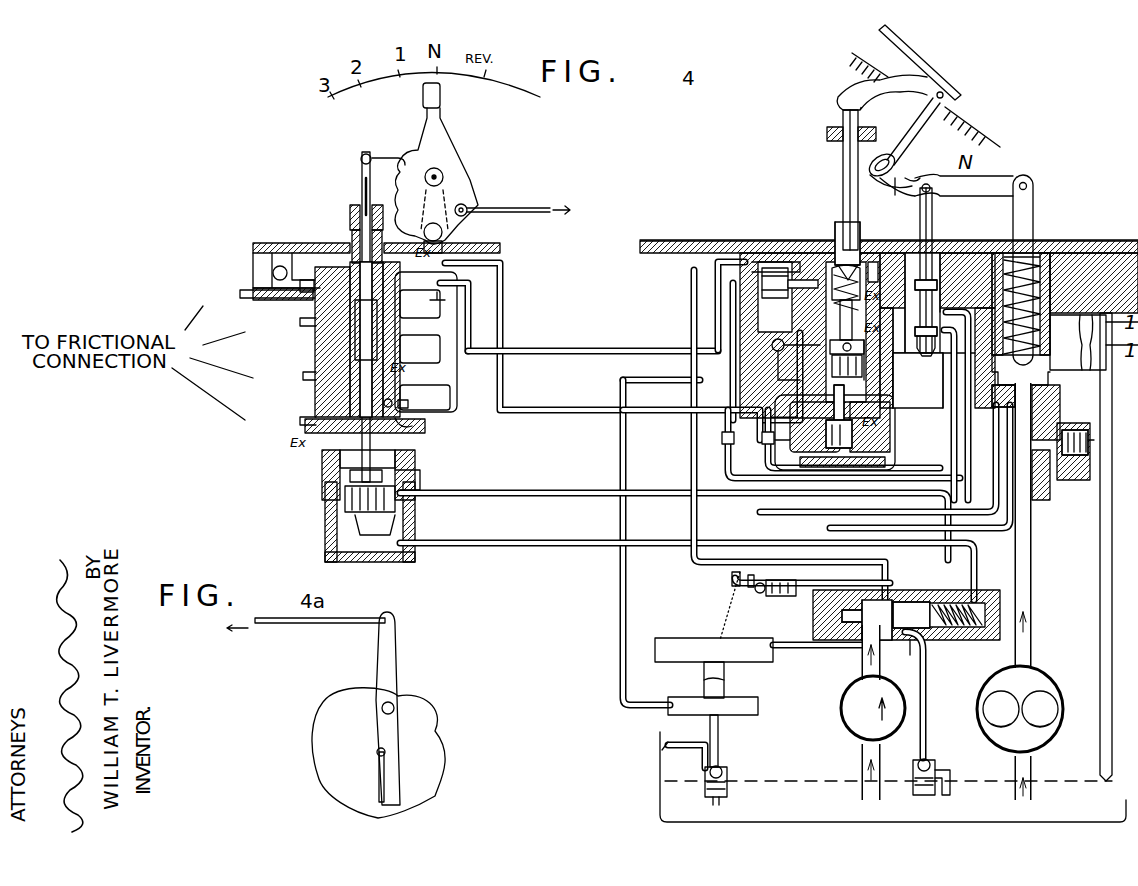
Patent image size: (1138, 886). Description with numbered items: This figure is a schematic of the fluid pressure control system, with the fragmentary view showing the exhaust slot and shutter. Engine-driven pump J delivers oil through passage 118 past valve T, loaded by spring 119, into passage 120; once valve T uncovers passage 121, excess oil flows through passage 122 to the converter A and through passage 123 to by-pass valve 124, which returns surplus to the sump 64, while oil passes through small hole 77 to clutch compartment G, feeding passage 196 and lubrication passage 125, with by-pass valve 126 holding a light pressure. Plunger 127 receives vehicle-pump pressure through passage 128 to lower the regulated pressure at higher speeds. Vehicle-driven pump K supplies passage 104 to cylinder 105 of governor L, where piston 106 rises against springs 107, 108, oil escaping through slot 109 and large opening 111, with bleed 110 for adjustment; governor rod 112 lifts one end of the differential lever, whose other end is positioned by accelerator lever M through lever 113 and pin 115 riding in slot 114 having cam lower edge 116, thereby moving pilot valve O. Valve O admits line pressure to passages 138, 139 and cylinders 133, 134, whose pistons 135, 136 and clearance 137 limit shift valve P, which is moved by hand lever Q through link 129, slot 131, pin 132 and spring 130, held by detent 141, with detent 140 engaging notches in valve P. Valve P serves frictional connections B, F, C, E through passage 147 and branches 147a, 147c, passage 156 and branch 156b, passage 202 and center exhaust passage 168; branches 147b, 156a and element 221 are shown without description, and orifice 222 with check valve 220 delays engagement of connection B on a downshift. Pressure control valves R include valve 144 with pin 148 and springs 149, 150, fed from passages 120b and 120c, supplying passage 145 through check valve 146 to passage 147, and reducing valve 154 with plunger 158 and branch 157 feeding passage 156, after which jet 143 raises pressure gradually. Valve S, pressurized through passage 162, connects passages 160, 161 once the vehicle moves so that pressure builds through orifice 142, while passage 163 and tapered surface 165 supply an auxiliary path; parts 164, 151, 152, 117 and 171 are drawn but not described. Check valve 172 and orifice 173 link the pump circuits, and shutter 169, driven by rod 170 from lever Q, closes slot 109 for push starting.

In FIG. 4, the lost-motion link 129 is at (362, 162).
In FIG. 4, the slot 131 is at (362, 188).
In FIG. 4, the pin 132 is at (350, 204).
In FIG. 4, the orifice 222 is at (310, 287).
In FIG. 4, the check valve 220 is at (270, 272).
In FIG. 4, the compression spring 130 is at (360, 333).
In FIG. 4, the clearance 137 is at (345, 462).
In FIG. 4, the piston 135 is at (336, 484).
In FIG. 4, the piston 136 is at (330, 520).
In FIG. 4, the cylinder 134 is at (375, 540).
In FIG. 4, the cylinder 133 is at (410, 478).
In FIG. 4, the center passage 168 is at (392, 442).
In FIG. 4, the detent 140 is at (395, 400).
In FIG. 4, the passage 202 is at (395, 345).
In FIG. 4, the passage 221 is at (437, 318).
In FIG. 4, the detent 141 is at (445, 235).
In FIG. 4, the branch passage 156b is at (495, 268).
In FIG. 4, the branch passage 147a is at (445, 289).
In FIG. 4, the branch passage 156a is at (423, 342).
In FIG. 4, the branch passage 147b is at (420, 392).
In FIG. 4, the branch passage 147c is at (412, 426).
In FIG. 4, the passage 147 is at (566, 351).
In FIG. 4, the passage 156 is at (570, 410).
In FIG. 4, the passage 138 is at (560, 486).
In FIG. 4, the passage 139 is at (550, 543).
In FIG. 4, the passage 162 is at (692, 268).
In FIG. 4, the passage 161 is at (716, 306).
In FIG. 4, the passage 160 is at (730, 375).
In FIG. 4, the passage 145 is at (769, 376).
In FIG. 4, the check valve 146 is at (776, 350).
In FIG. 4, the orifice 142 is at (727, 450).
In FIG. 4, the small jet 143 is at (765, 445).
In FIG. 4, the branch passage 157 is at (812, 442).
In FIG. 4, the reducing valve 154 is at (836, 423).
In FIG. 4, the plunger 158 is at (842, 400).
In FIG. 4, the tapered surface 165 is at (866, 260).
In FIG. 4, the passage 163 is at (805, 262).
In FIG. 4, the valve 164 is at (815, 255).
In FIG. 4, the plunger rod 152 is at (843, 158).
In FIG. 4, the clevis 151 is at (843, 100).
In FIG. 4, the lever 113 is at (912, 148).
In FIG. 4, the lower edge 116 is at (880, 178).
In FIG. 4, the roller or pin 115 is at (898, 175).
In FIG. 4, the arm 117 is at (935, 192).
In FIG. 4, the slot 114 is at (903, 199).
In FIG. 4, the governor rod 112 is at (1033, 238).
In FIG. 4, the spring 108 is at (1048, 272).
In FIG. 4, the spring 107 is at (1072, 316).
In FIG. 4, the piston 106 is at (1045, 380).
In FIG. 4, the cylinder 105 is at (1045, 400).
In FIG. 4, the adjustable orifice or bleed 110 is at (1064, 480).
In FIG. 4, the passage 104 is at (1030, 574).
In FIG. 4, the spring 150 is at (858, 275).
In FIG. 4, the passage 120c is at (893, 272).
In FIG. 4, the spring 149 is at (840, 305).
In FIG. 4, the pin 148 is at (862, 347).
In FIG. 4, the passage 120b is at (870, 350).
In FIG. 4, the valve 144 is at (875, 355).
In FIG. 4, the passage 120 is at (890, 430).
In FIG. 4, the passage 128 is at (942, 543).
In FIG. 4, the orifice 173 is at (752, 585).
In FIG. 4, the check valve 172 is at (762, 594).
In FIG. 4, the spring 171 is at (805, 590).
In FIG. 4, the plunger 127 is at (882, 610).
In FIG. 4, the spring 119 is at (940, 600).
In FIG. 4, the passage 122 is at (805, 645).
In FIG. 4, the passage 118 is at (862, 656).
In FIG. 4, the passage 121 is at (930, 642).
In FIG. 4, the passage 123 is at (930, 720).
In FIG. 4, the by-pass valve 124 is at (935, 766).
In FIG. 4, the passage 125 is at (678, 748).
In FIG. 4, the by-pass valve 126 is at (724, 768).
In FIG. 4, the small hole 77 is at (705, 680).
In FIG. 4, the sump 64 is at (1000, 813).
In FIG. 4, the passage 196 is at (620, 620).
In FIG. 4, the rod 170 is at (538, 217).
In FIG. 4A, the rod 170 is at (352, 622).
In FIG. 4A, the large opening 111 is at (376, 752).
In FIG. 4A, the slot 109 is at (380, 777).
In FIG. 4A, the shutter 169 is at (398, 768).
In FIG. 4, the manual shift lever Q is at (452, 182).
In FIG. 4, the shift valve P is at (350, 243).
In FIG. 4, the frictional connection B is at (226, 297).
In FIG. 4, the frictional connection F is at (281, 333).
In FIG. 4, the frictional connection C is at (283, 381).
In FIG. 4, the frictional connection E is at (273, 424).
In FIG. 4, the valve S is at (762, 262).
In FIG. 4, the pressure control valves R is at (835, 236).
In FIG. 4, the accelerator pedal lever M is at (933, 72).
In FIG. 4, the pilot valve O is at (937, 330).
In FIG. 4, the hydraulic governor L is at (1044, 292).
In FIG. 4, the vehicle-driven pump K is at (1052, 682).
In FIG. 4, the engine-driven pump J is at (842, 700).
In FIG. 4, the valve T is at (938, 638).
In FIG. 4, the converter A is at (693, 645).
In FIG. 4, the clutch compartment G is at (690, 712).